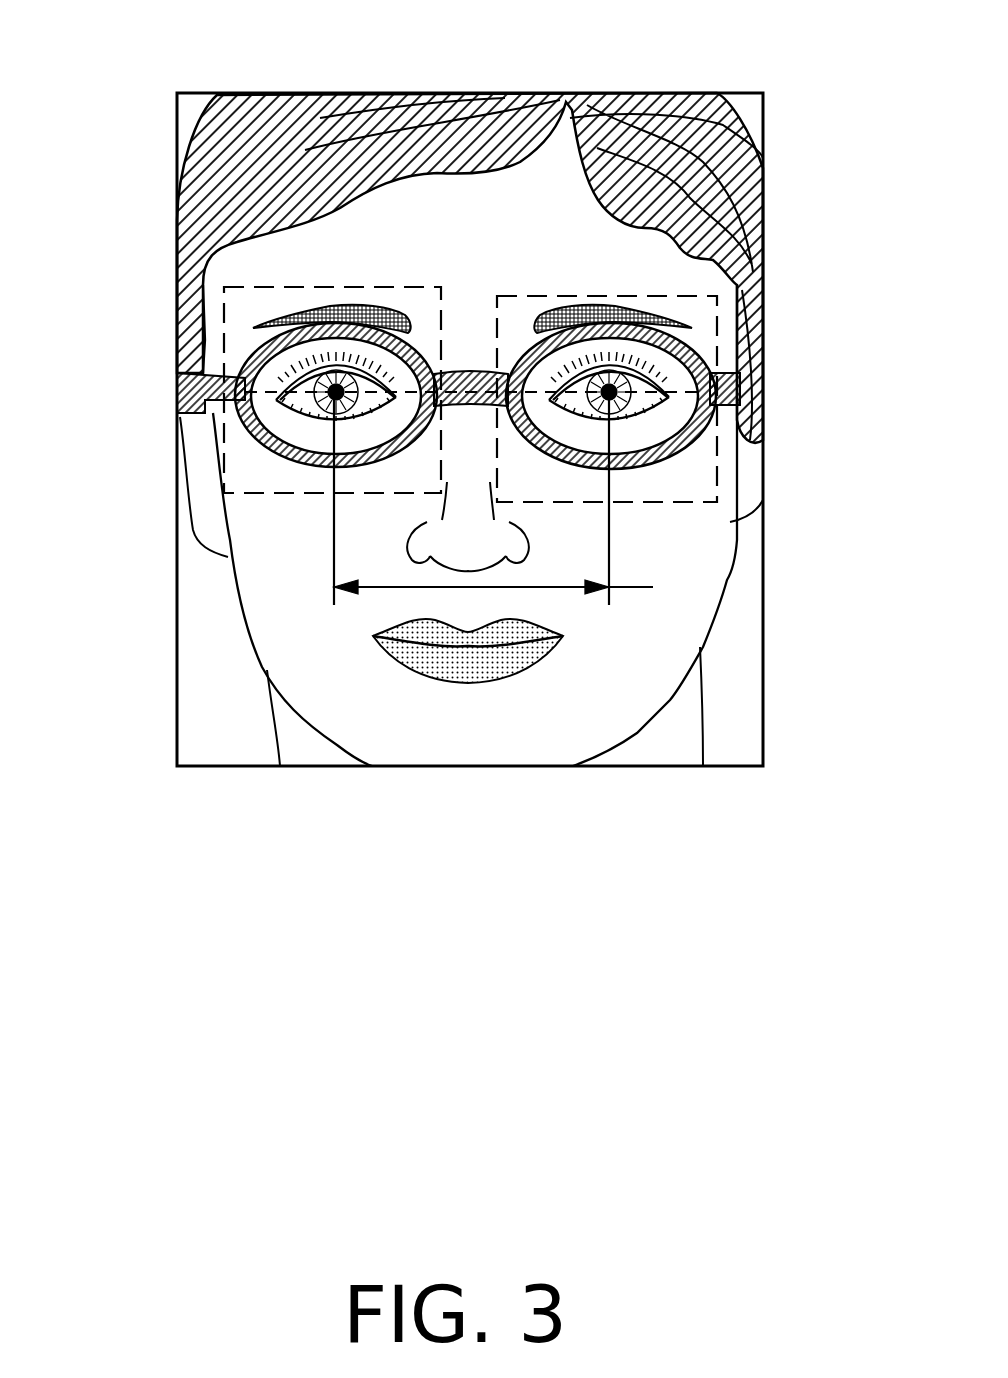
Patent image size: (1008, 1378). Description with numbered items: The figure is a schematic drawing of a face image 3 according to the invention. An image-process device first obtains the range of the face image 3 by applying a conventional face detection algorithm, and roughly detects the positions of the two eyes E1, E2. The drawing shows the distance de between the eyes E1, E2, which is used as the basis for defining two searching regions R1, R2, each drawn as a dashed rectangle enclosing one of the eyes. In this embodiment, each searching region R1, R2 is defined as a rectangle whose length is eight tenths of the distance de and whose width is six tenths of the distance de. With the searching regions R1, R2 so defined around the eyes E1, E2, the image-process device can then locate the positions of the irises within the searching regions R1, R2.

The face image 3 is at (753, 668).
The searching region R1 is at (327, 297).
The searching region R2 is at (567, 298).
The eye E1 is at (334, 392).
The eye E2 is at (609, 392).
The distance between eyes de is at (498, 498).